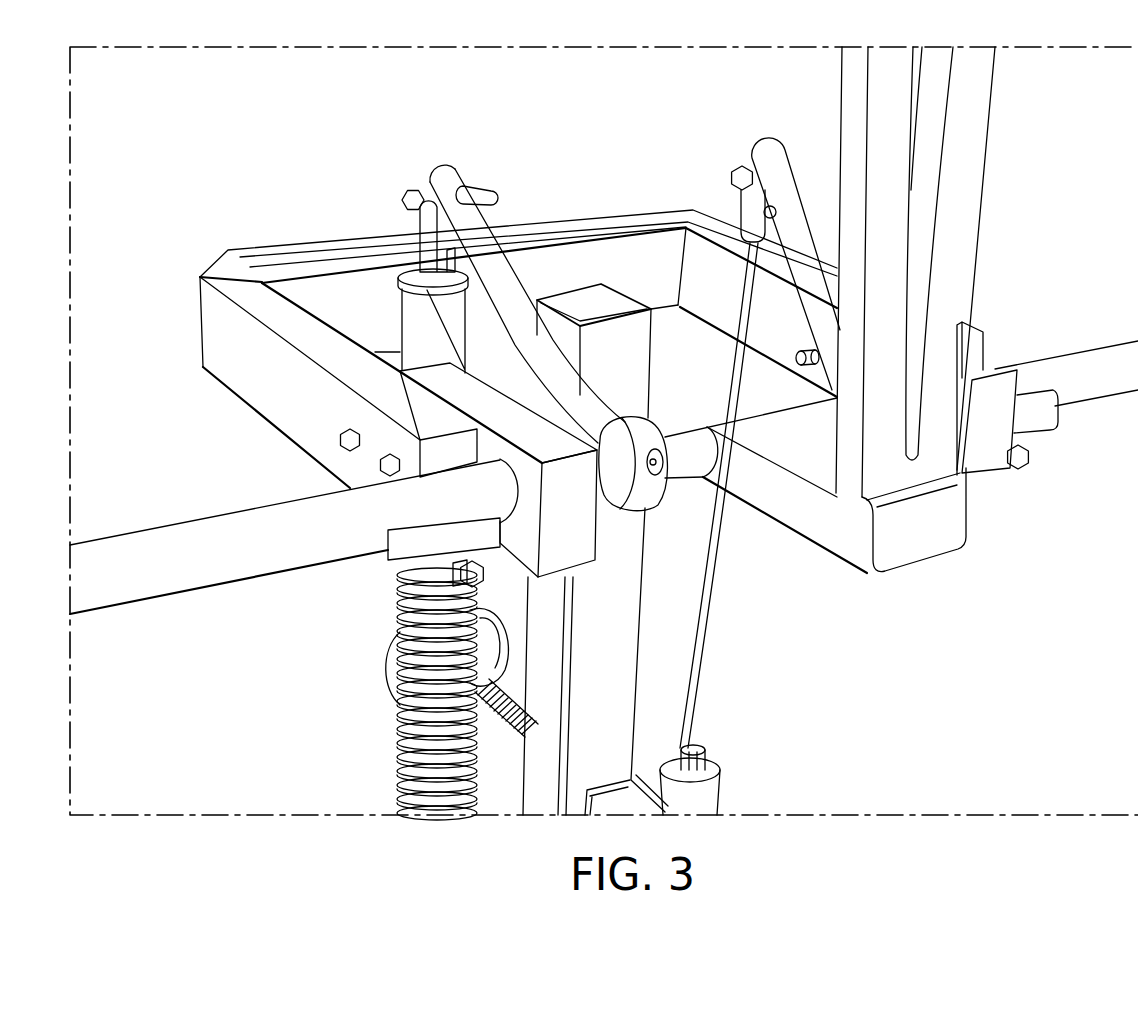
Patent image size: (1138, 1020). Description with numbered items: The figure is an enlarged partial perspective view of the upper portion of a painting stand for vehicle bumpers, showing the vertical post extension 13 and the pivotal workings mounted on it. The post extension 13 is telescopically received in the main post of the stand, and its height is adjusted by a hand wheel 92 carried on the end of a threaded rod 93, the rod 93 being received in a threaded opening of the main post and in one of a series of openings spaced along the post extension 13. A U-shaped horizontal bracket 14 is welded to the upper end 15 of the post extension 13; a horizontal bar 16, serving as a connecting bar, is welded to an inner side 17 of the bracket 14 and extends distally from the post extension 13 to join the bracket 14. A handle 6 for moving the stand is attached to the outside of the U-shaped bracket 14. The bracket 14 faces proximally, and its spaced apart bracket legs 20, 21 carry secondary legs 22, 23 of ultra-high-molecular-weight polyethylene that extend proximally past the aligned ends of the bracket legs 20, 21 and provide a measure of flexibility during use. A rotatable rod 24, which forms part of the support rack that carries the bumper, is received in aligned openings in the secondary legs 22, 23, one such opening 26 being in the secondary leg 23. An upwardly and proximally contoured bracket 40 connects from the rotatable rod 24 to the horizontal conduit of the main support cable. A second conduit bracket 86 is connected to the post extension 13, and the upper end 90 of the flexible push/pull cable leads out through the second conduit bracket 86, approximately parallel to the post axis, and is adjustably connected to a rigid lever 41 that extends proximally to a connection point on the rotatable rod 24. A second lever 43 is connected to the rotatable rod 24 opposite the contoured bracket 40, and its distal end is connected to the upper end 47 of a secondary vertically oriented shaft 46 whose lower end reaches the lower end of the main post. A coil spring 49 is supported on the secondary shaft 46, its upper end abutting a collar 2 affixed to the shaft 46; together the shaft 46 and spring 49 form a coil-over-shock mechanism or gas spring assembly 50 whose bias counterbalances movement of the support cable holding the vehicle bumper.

The collar 2 is at (392, 281).
The handle 6 is at (293, 249).
The post extension 13 is at (635, 535).
The U-shaped horizontal bracket 14 is at (275, 383).
The upper end 15 is at (618, 305).
The horizontal bar 16 is at (533, 272).
The inner side 17 is at (607, 257).
The bracket leg 20 is at (980, 342).
The bracket leg 21 is at (365, 467).
The secondary leg 22 is at (995, 415).
The secondary leg 23 is at (570, 535).
The rotatable rod 24 is at (163, 575).
The aligned opening 26 is at (440, 508).
The contoured bracket 40 is at (893, 213).
The rigid lever 41 is at (784, 219).
The second lever 43 is at (487, 198).
The secondary shaft 46 is at (427, 313).
The upper end 47 is at (425, 238).
The coil spring 49 is at (407, 745).
The coil-over-shock mechanism/gas spring assembly 50 is at (420, 658).
The second conduit bracket 86 is at (713, 760).
The upper end 90 is at (708, 613).
The hand wheel 92 is at (503, 632).
The threaded rod 93 is at (496, 722).